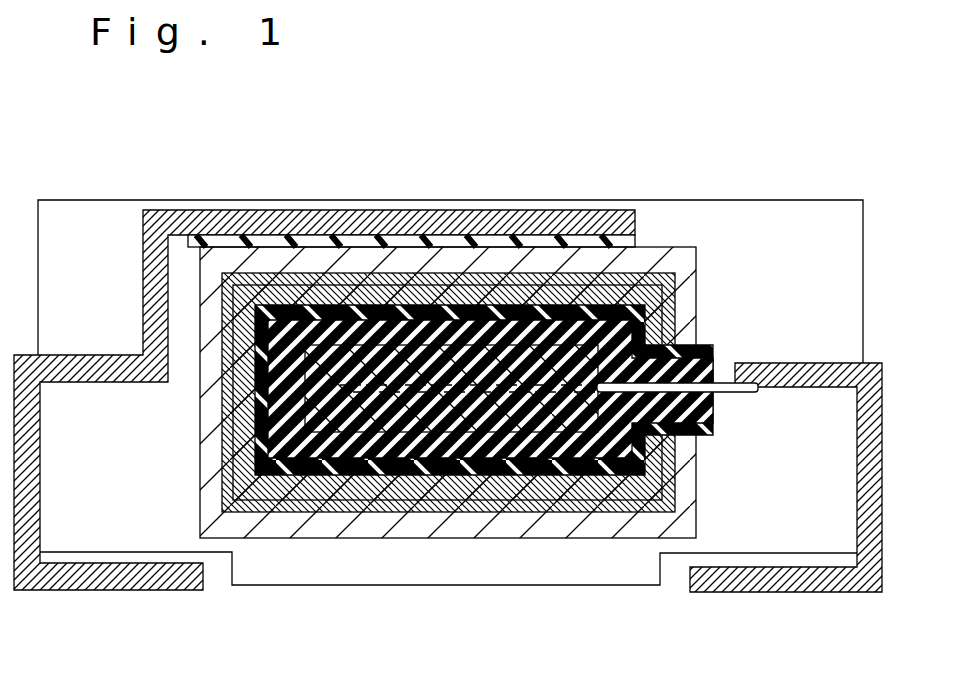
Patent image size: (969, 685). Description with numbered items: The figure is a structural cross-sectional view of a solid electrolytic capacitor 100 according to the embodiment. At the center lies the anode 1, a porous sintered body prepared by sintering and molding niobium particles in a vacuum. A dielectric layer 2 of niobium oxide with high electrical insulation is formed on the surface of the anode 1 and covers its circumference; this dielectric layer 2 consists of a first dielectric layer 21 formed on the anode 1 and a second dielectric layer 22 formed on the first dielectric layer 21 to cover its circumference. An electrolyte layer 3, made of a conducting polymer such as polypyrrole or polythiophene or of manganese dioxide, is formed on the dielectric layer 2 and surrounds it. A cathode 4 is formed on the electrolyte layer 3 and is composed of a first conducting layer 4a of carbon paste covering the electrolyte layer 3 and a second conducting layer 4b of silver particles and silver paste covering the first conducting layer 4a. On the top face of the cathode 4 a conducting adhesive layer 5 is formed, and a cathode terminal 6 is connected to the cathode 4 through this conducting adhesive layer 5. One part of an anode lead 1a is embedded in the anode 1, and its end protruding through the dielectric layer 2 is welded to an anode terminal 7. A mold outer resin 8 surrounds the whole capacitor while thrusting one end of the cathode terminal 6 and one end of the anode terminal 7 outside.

The solid electrolytic capacitor 100 is at (783, 183).
The anode 1 is at (330, 365).
The anode lead 1a is at (728, 390).
The dielectric layer 2 is at (490, 490).
The first dielectric layer 21 is at (324, 450).
The second dielectric layer 22 is at (434, 462).
The electrolyte layer 3 is at (518, 482).
The cathode 4 is at (448, 454).
The first conducting layer 4a is at (583, 505).
The second conducting layer 4b is at (645, 530).
The conducting adhesive layer 5 is at (591, 245).
The cathode terminal 6 is at (160, 590).
The anode terminal 7 is at (787, 592).
The mold outer resin 8 is at (100, 222).